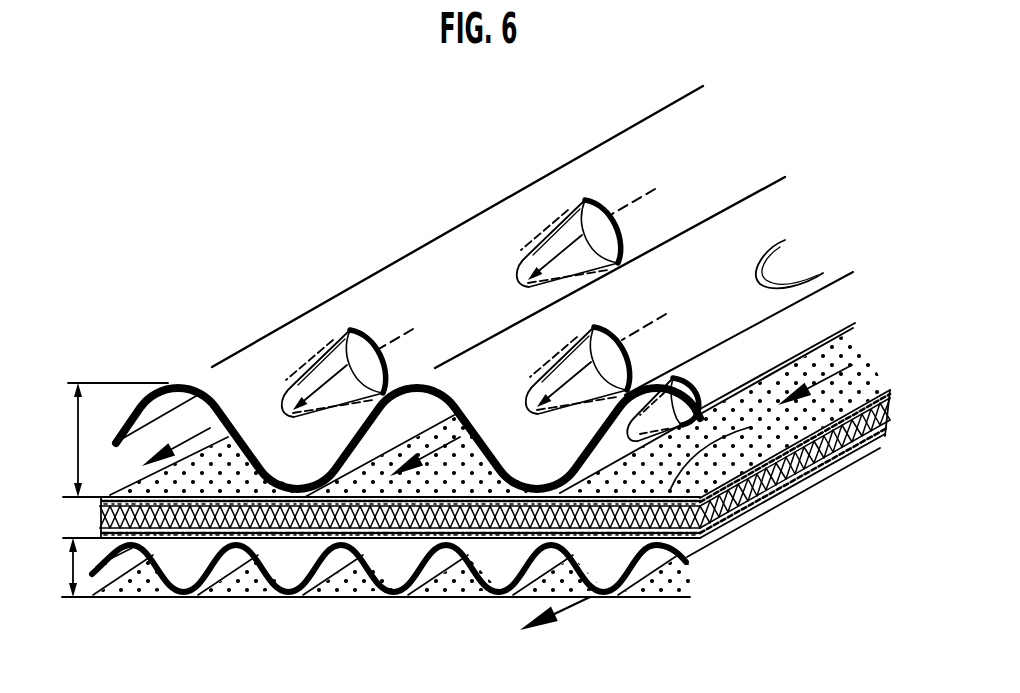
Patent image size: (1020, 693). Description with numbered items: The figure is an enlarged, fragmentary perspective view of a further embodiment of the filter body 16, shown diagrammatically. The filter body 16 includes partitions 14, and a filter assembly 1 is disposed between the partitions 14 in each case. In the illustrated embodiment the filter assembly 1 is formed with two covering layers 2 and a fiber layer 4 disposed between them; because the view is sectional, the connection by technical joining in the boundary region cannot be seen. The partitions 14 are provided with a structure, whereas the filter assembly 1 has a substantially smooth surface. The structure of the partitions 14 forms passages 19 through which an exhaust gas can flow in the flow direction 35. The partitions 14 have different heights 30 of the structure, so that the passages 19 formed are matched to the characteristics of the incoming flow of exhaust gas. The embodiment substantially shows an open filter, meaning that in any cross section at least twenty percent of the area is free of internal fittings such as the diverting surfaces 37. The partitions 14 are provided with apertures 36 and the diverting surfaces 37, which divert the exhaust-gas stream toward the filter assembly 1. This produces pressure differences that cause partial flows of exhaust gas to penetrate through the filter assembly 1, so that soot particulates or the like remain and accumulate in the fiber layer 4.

The filter assembly 1 is at (72, 517).
The covering layers 2 is at (798, 452).
The fiber layer 4 is at (752, 488).
The partitions 14 is at (230, 367).
The filter body 16 is at (282, 193).
The passages 19 is at (182, 565).
The heights 30 is at (76, 437).
The flow direction 35 is at (421, 330).
The apertures 36 is at (348, 375).
The diverting surfaces 37 is at (312, 382).